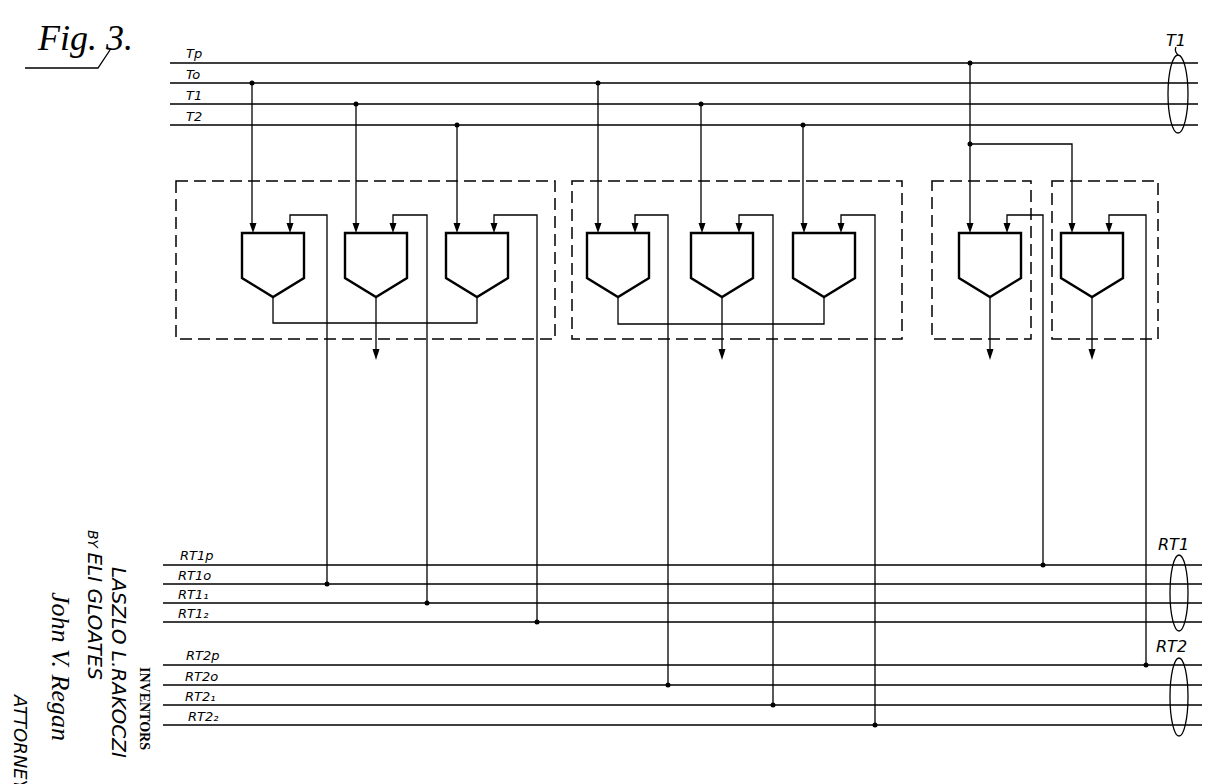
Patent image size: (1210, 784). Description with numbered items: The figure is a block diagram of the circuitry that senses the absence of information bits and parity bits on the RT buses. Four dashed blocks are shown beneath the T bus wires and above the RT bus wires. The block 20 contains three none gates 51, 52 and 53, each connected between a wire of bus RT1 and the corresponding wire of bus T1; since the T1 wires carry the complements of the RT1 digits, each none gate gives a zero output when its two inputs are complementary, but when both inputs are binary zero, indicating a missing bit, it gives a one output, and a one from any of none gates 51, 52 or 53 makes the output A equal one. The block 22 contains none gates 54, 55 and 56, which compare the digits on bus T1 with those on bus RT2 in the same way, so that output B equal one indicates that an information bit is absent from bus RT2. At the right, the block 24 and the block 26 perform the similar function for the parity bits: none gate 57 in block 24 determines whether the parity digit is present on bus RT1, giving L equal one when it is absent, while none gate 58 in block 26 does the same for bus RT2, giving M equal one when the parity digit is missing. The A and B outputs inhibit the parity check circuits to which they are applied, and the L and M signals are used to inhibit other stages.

The information-bit sensing circuit for bus RT1 20 is at (522, 181).
The information-bit sensing circuit for bus RT2 22 is at (822, 181).
The parity-bit sensing circuit for bus RT1 24 is at (995, 181).
The parity-bit sensing circuit for bus RT2 26 is at (1120, 181).
The none gate 51 is at (242, 258).
The none gate 52 is at (357, 287).
The none gate 53 is at (488, 290).
The none gate 54 is at (612, 293).
The none gate 55 is at (707, 291).
The none gate 56 is at (808, 291).
The none gate 57 is at (975, 294).
The none gate 58 is at (1102, 292).